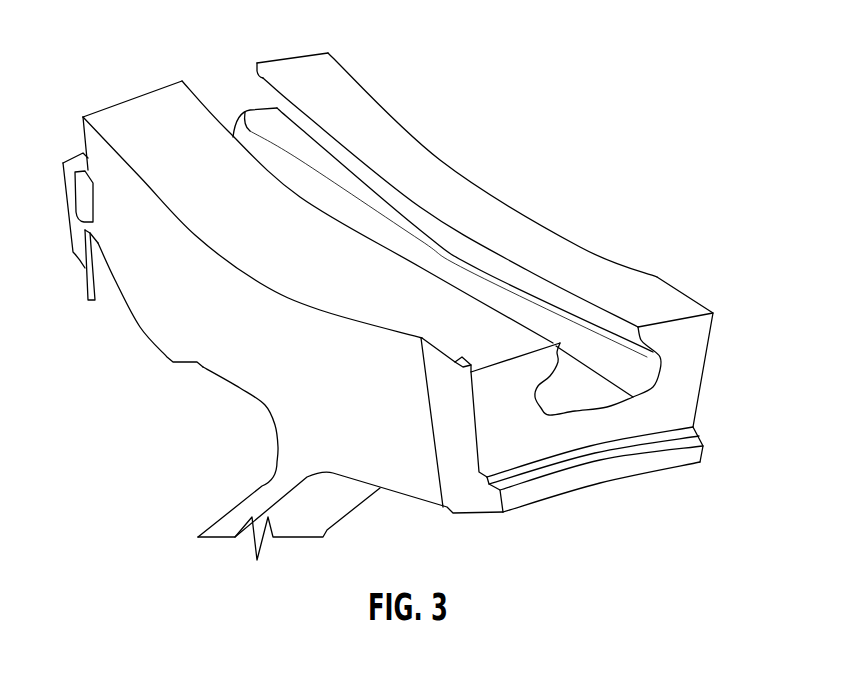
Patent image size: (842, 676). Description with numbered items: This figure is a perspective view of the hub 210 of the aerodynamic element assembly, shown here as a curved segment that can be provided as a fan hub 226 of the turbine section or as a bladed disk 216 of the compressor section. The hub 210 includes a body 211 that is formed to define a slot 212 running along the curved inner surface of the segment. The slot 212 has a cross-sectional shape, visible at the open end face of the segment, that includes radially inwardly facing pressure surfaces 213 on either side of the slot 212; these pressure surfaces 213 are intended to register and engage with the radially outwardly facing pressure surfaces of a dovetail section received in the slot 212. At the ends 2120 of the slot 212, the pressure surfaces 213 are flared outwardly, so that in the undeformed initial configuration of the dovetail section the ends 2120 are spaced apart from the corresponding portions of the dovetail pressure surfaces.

The hub 210 is at (108, 122).
The body 211 is at (245, 258).
The slot 212 is at (582, 380).
The pressure surfaces 213 is at (662, 355).
The ends 2120 is at (240, 110).
The bladed disk 216 is at (287, 350).
The fan hub 226 is at (328, 350).